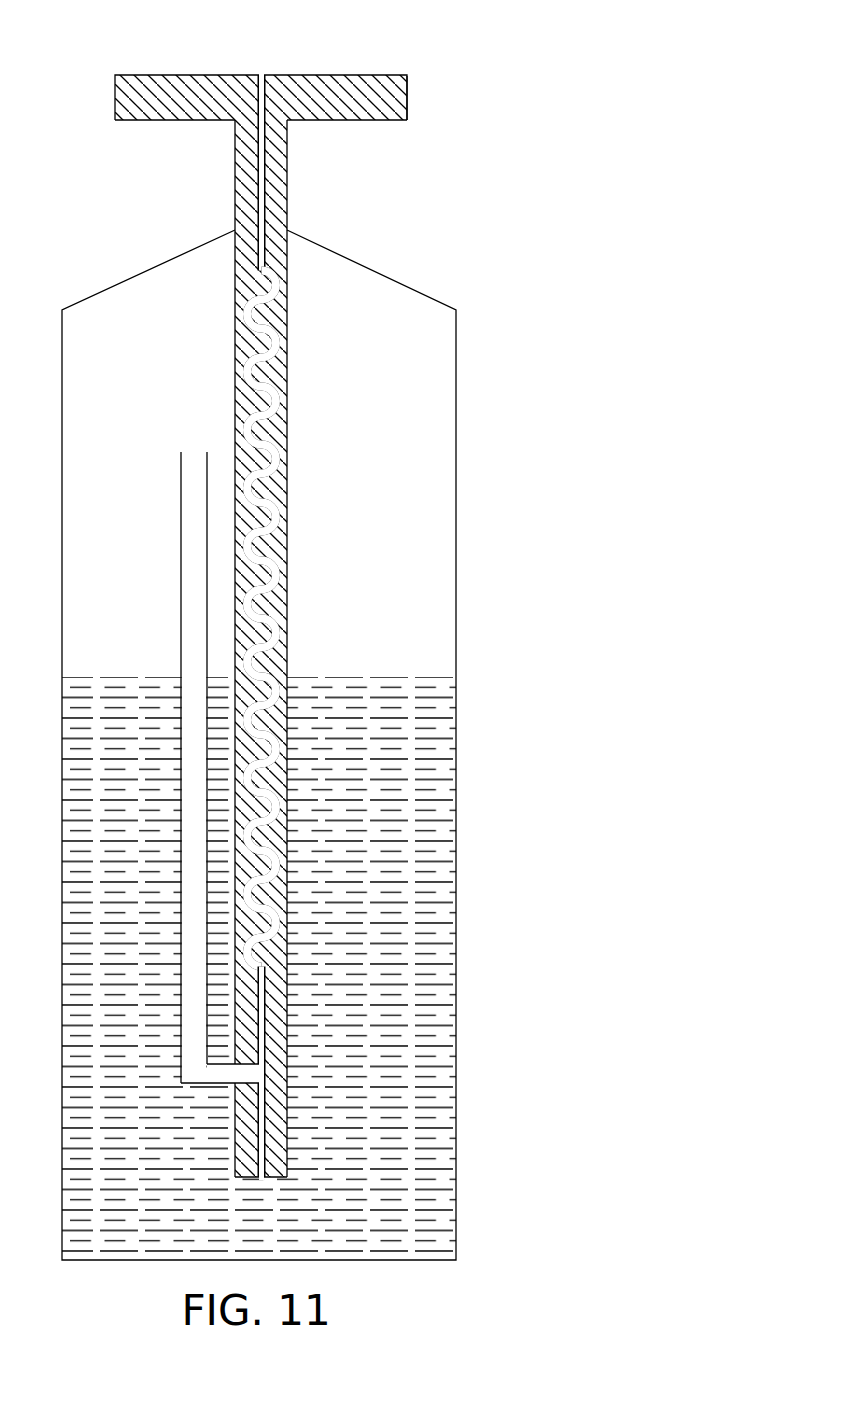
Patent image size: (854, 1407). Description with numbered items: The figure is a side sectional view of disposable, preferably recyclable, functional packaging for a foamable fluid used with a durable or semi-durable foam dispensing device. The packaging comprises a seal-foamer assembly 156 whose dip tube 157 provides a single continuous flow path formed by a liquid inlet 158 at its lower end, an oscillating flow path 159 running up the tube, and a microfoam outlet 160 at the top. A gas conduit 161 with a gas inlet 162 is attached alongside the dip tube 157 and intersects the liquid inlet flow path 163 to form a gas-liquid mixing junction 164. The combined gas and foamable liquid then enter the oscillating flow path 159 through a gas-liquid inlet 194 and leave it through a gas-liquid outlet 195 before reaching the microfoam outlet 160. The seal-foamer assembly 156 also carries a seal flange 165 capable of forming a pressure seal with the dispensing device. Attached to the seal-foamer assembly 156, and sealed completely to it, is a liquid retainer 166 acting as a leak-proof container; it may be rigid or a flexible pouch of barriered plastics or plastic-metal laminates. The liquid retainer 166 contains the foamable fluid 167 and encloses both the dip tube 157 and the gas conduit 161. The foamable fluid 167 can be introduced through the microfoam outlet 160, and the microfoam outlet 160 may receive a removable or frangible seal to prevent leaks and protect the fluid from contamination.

The seal-foamer assembly 156 is at (336, 88).
The dip tube 157 is at (287, 540).
The liquid inlet 158 is at (263, 1190).
The oscillating flow path 159 is at (278, 873).
The microfoam outlet 160 is at (260, 66).
The gas conduit 161 is at (181, 592).
The gas inlet 162 is at (192, 433).
The liquid inlet flow path 163 is at (265, 1143).
The gas-liquid mixing junction 164 is at (245, 1071).
The seal flange 165 is at (408, 97).
The liquid retainer 166 is at (456, 640).
The foamable fluid 167 is at (440, 1025).
The gas-liquid inlet 194 is at (266, 967).
The gas-liquid outlet 195 is at (270, 285).